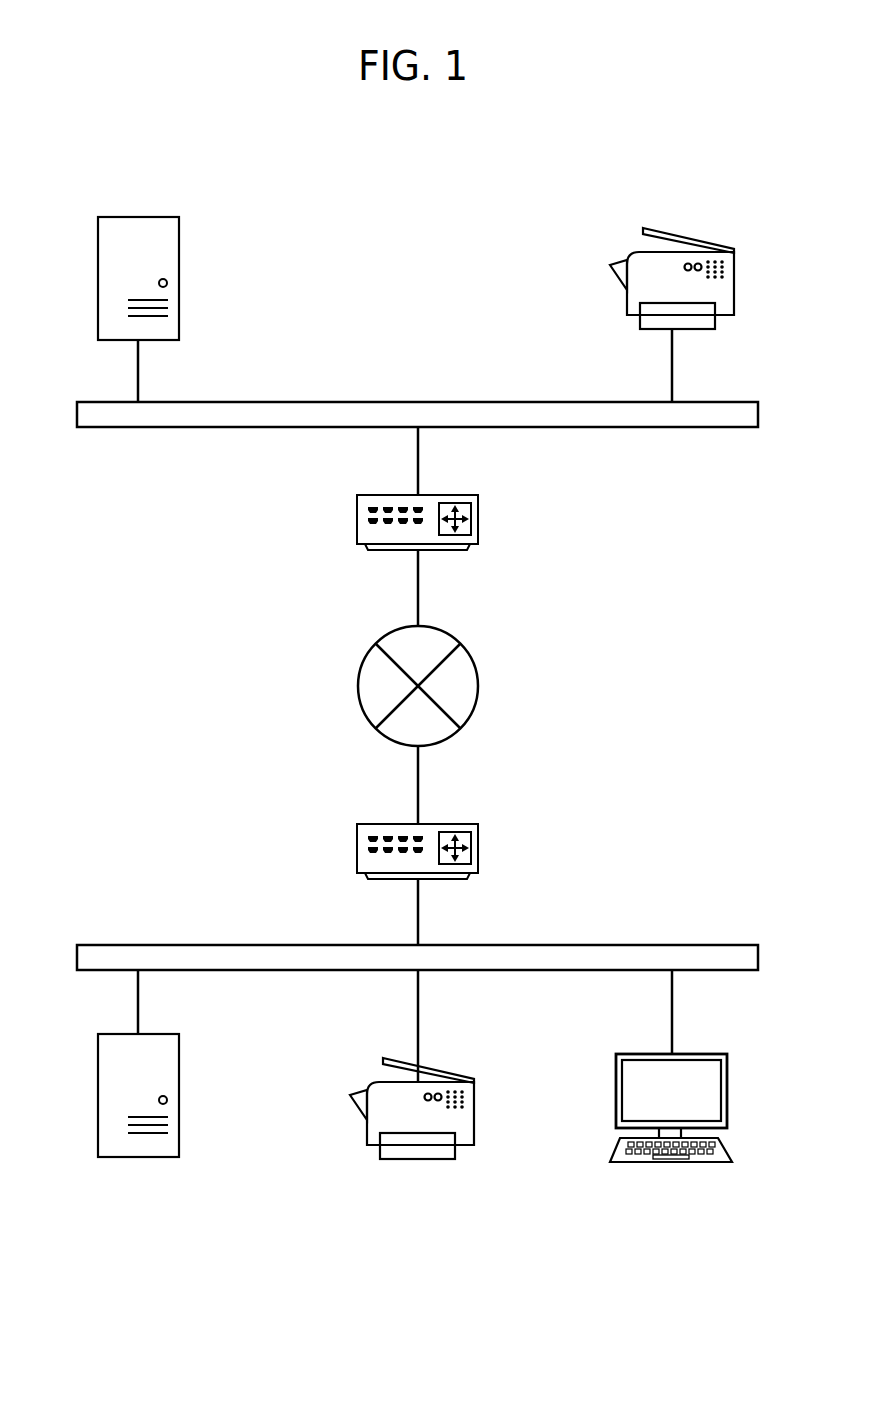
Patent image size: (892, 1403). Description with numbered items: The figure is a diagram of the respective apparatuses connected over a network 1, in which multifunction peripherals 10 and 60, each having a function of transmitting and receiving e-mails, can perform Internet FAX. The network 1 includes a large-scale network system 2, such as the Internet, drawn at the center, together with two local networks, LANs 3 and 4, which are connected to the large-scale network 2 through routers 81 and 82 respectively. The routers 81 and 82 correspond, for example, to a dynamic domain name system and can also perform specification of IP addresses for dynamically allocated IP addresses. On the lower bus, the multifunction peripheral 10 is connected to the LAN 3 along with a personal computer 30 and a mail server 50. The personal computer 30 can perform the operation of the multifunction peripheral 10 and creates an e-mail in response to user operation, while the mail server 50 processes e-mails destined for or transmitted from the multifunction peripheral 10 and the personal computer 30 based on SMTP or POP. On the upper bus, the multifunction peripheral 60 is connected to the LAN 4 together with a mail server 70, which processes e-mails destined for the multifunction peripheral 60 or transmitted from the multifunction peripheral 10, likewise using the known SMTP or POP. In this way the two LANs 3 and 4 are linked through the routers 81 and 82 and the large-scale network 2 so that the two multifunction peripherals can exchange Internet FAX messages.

The network 1 is at (578, 686).
The large-scale network system 2 is at (478, 672).
The LAN 3 is at (222, 946).
The LAN 4 is at (276, 402).
The multifunction peripheral 10 is at (415, 1158).
The personal computer 30 is at (672, 1163).
The mail server 50 is at (138, 1157).
The multifunction peripheral 60 is at (678, 232).
The mail server 70 is at (137, 217).
The router 81 is at (478, 846).
The router 82 is at (478, 517).